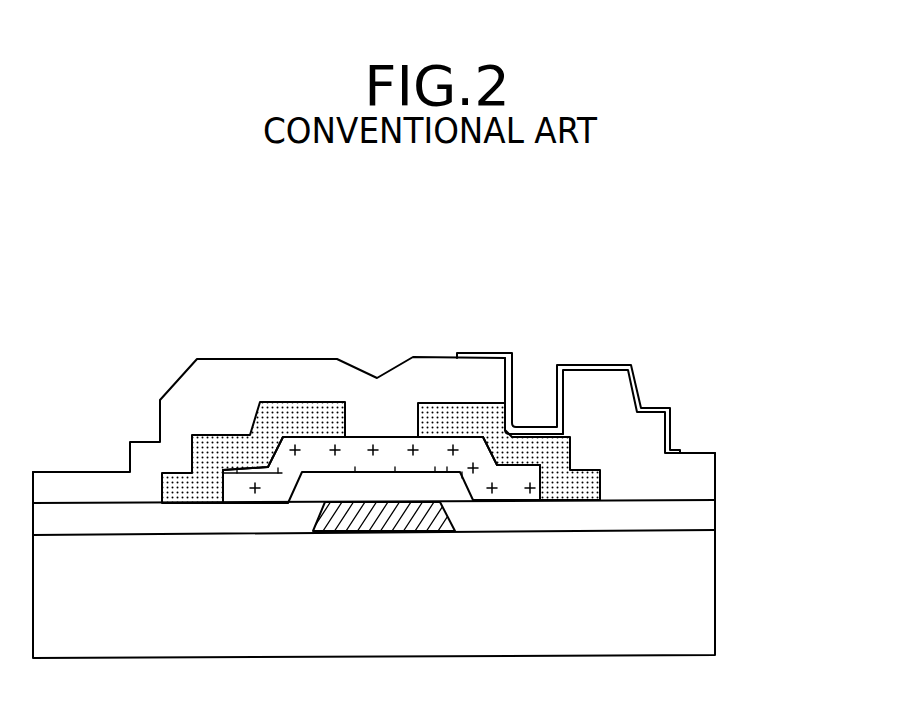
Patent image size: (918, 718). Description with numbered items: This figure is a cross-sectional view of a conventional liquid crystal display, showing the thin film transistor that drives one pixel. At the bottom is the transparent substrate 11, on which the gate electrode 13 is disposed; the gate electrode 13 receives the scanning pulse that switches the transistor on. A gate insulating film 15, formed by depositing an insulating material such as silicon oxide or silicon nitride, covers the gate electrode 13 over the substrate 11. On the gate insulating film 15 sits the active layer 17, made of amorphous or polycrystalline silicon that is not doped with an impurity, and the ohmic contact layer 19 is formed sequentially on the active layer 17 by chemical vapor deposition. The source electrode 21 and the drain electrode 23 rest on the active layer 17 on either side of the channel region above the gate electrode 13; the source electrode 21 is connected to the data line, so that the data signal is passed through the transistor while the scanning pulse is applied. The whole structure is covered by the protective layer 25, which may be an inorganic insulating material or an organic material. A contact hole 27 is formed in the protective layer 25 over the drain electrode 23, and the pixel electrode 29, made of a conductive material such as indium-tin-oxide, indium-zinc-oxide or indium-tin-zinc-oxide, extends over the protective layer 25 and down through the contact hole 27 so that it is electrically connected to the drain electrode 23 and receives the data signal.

The substrate 11 is at (695, 600).
The gate electrode 13 is at (380, 523).
The gate insulating film 15 is at (695, 520).
The active layer 17 is at (387, 453).
The ohmic contact layer 19 is at (458, 415).
The source electrode 21 is at (258, 418).
The drain electrode 23 is at (583, 475).
The protective layer 25 is at (703, 483).
The contact hole 27 is at (538, 378).
The pixel electrode 29 is at (682, 452).